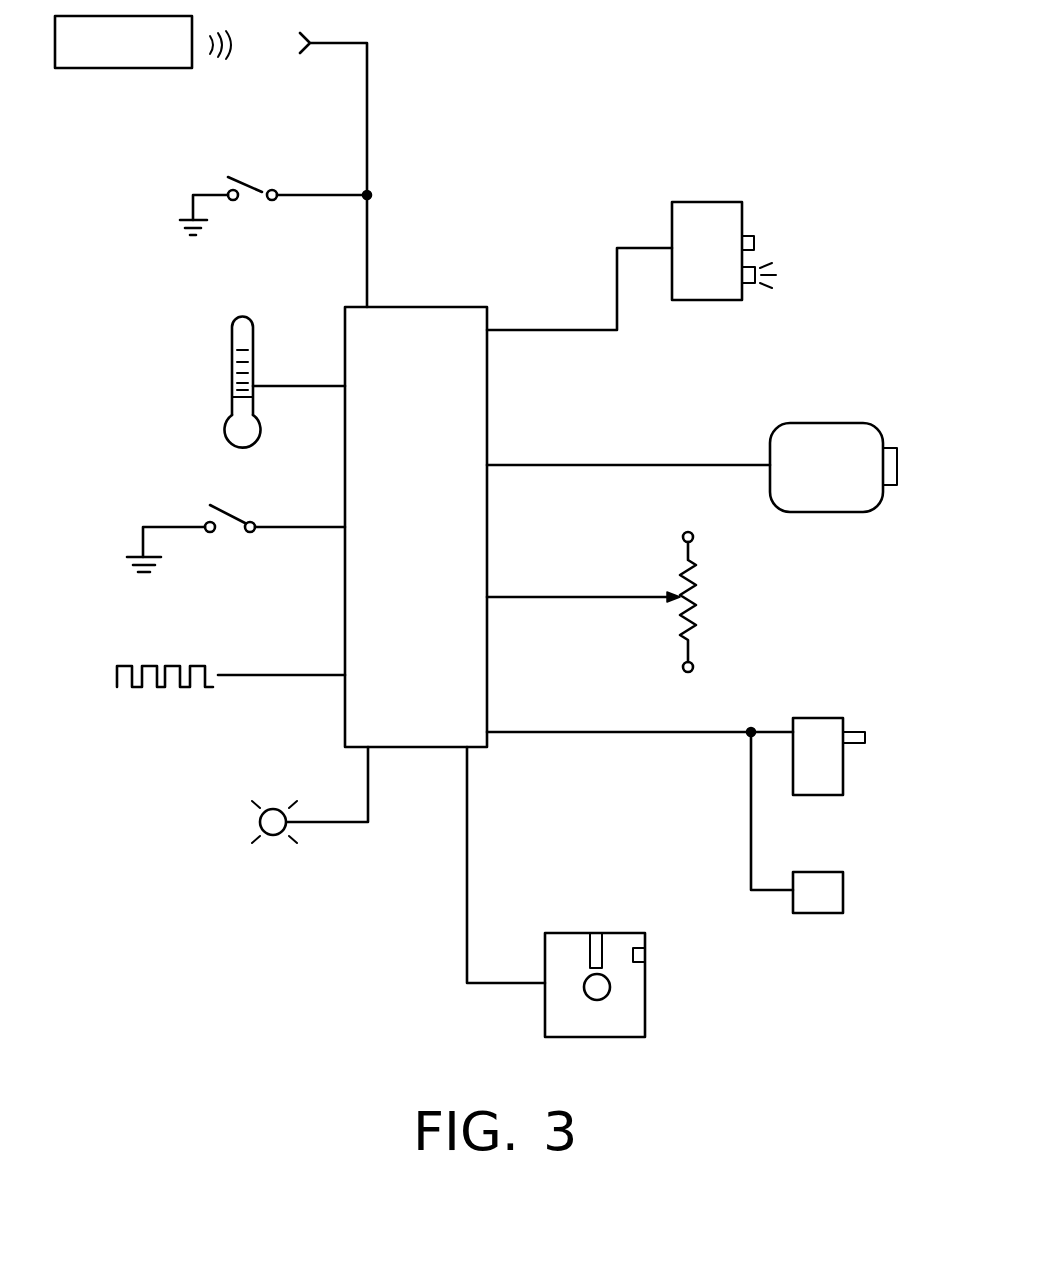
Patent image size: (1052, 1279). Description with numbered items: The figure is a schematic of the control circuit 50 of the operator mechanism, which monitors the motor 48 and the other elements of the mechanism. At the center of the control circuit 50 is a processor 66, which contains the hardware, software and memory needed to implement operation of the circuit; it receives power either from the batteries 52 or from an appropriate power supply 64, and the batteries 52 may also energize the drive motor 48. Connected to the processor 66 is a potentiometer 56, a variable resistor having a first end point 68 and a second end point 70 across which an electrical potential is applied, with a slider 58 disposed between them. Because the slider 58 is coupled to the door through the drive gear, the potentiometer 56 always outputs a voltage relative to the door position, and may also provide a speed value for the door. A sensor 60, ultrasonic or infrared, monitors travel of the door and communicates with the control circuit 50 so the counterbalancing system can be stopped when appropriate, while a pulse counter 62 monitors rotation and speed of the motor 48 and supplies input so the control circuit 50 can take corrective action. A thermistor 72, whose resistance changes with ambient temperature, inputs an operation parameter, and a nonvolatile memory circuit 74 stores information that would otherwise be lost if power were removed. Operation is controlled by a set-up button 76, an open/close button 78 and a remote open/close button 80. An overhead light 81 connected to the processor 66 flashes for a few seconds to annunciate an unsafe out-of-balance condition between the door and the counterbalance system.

The motor 48 is at (847, 435).
The control circuit 50 is at (662, 83).
The batteries 52 is at (835, 890).
The potentiometer 56 is at (644, 586).
The slider 58 is at (678, 598).
The sensor 60 is at (718, 205).
The pulse counter 62 is at (175, 688).
The power supply 64 is at (833, 772).
The processor 66 is at (472, 422).
The first end point 68 is at (683, 535).
The second end point 70 is at (694, 667).
The thermistor 72 is at (230, 345).
The nonvolatile memory circuit 74 is at (640, 1015).
The set-up button 76 is at (235, 508).
The open/close button 78 is at (257, 178).
The remote open/close button 80 is at (107, 63).
The overhead light 81 is at (270, 835).